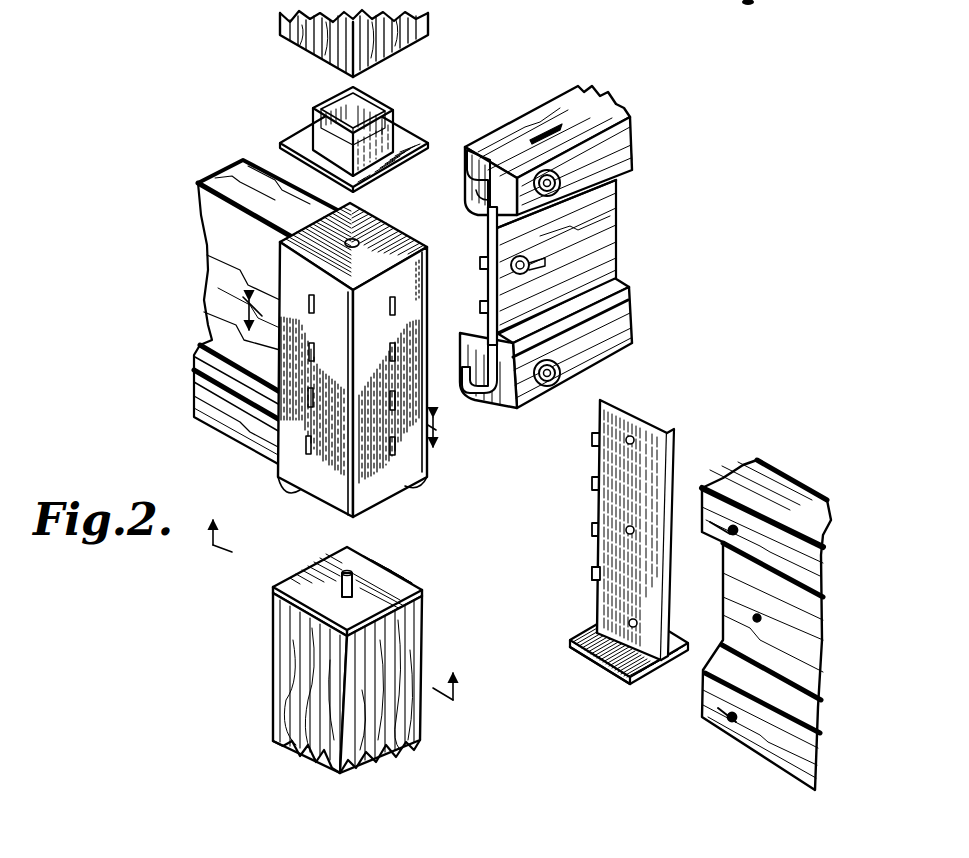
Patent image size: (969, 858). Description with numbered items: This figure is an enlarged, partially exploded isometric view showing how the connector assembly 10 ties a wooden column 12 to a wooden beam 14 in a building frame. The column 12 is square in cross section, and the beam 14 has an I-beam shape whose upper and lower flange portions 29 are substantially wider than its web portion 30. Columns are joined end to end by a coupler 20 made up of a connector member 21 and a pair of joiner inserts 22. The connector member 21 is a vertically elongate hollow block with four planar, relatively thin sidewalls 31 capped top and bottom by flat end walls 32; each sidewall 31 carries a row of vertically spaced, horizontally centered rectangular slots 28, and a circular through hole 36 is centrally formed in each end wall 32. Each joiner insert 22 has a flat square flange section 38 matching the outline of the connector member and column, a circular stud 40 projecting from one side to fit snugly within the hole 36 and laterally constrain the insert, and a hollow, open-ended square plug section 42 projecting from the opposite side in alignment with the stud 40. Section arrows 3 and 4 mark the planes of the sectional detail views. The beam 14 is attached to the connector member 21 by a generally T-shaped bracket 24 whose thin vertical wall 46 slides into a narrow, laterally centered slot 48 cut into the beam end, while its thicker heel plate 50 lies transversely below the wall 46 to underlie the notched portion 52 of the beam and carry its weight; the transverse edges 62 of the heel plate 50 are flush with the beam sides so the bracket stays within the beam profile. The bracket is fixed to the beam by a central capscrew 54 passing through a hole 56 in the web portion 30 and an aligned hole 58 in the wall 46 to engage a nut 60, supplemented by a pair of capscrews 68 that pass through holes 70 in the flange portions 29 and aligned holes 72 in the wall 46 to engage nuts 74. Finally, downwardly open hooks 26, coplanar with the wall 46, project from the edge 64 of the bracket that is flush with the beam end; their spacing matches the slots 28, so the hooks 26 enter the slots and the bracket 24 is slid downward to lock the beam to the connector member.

The section line 3- 3 is at (327, 623).
The section line 4- 4 is at (340, 372).
The connector assembly 10 is at (731, 208).
The column 12 is at (300, 47).
The beam 14 is at (662, 439).
The coupler 20 is at (316, 356).
The connector member 21 is at (427, 308).
The joiner insert 22 is at (325, 356).
The bracket 24 is at (575, 441).
The hooks 26 is at (478, 263).
The slots 28 is at (308, 346).
The flange portions 29 is at (607, 273).
The web portion 30 is at (590, 258).
The sidewalls 31 is at (296, 465).
The end walls 32 is at (257, 222).
The through hole 36 is at (348, 240).
The flange section 38 is at (300, 133).
The stud 40 is at (357, 570).
The second plug section 42 is at (380, 107).
The vertical wall 46 is at (630, 433).
The slot 48 is at (534, 138).
The heel plate 50 is at (480, 387).
The notched portion 52 is at (727, 730).
The central capscrew 54 is at (533, 260).
The hole 56 is at (753, 615).
The hole 58 is at (632, 527).
The nut 60 is at (545, 247).
The transverse edges 62 is at (600, 653).
The edge 64 is at (597, 553).
The capscrews 68 is at (562, 182).
The holes 70 is at (728, 526).
The holes 72 is at (635, 438).
The nuts 74 is at (560, 170).